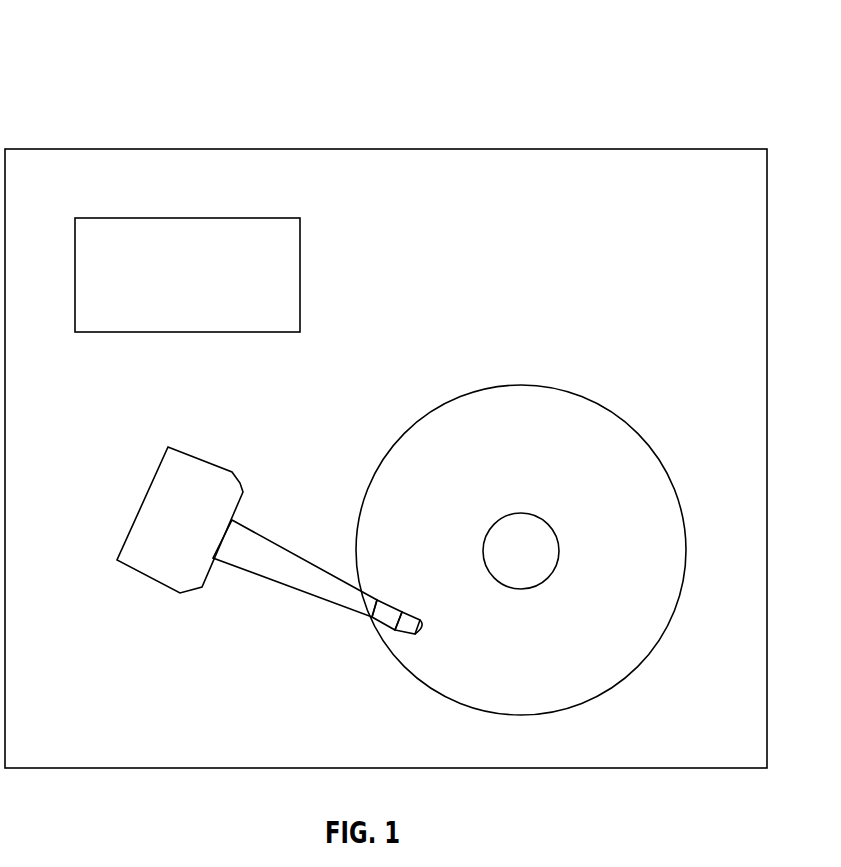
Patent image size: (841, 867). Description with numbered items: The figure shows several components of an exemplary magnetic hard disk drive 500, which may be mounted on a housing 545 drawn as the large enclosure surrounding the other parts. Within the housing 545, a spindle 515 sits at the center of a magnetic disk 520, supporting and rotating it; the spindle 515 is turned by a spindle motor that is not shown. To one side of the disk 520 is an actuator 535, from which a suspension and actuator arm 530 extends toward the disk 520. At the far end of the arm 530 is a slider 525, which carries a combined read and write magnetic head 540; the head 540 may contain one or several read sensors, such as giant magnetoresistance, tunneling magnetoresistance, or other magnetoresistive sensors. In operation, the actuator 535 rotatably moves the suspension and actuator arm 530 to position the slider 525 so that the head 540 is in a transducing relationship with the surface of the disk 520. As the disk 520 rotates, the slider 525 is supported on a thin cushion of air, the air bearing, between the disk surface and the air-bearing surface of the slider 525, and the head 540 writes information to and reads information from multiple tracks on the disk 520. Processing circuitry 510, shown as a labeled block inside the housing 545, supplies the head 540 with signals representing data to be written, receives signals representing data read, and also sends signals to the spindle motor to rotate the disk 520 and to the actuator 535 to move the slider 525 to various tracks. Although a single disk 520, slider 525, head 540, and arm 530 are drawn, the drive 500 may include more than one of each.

The hard disk drive 500 is at (125, 42).
The housing 545 is at (702, 149).
The processing circuitry 510 is at (140, 217).
The magnetic disk 520 is at (542, 465).
The spindle 515 is at (542, 562).
The actuator 535 is at (198, 537).
The suspension and actuator arm 530 is at (257, 533).
The slider 525 is at (418, 612).
The combined read and write magnetic head 540 is at (423, 629).